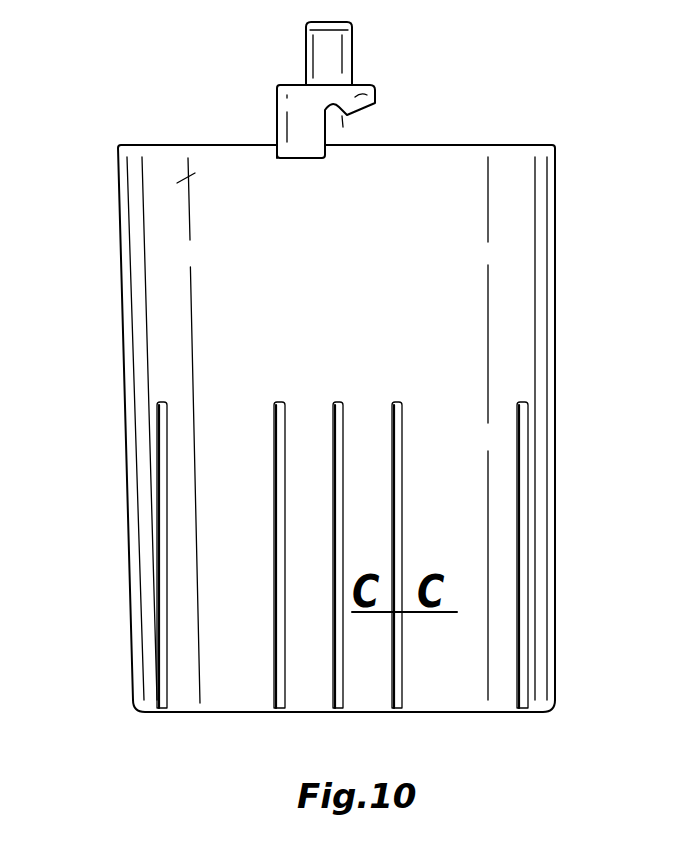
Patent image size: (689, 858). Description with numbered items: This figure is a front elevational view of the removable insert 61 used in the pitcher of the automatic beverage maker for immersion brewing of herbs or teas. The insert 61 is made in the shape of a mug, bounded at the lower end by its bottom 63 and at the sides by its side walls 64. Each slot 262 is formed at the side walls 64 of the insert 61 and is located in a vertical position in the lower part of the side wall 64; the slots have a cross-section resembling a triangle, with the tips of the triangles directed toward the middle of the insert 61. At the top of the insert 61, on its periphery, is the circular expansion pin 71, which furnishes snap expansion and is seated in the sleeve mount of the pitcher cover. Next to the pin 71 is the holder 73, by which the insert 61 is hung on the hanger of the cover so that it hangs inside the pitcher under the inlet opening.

The insert 61 is at (155, 323).
The bottom 63 is at (197, 713).
The side walls 64 is at (125, 417).
The expansion pin 71 is at (323, 48).
The holder 73 is at (375, 93).
The slot 262 is at (396, 437).